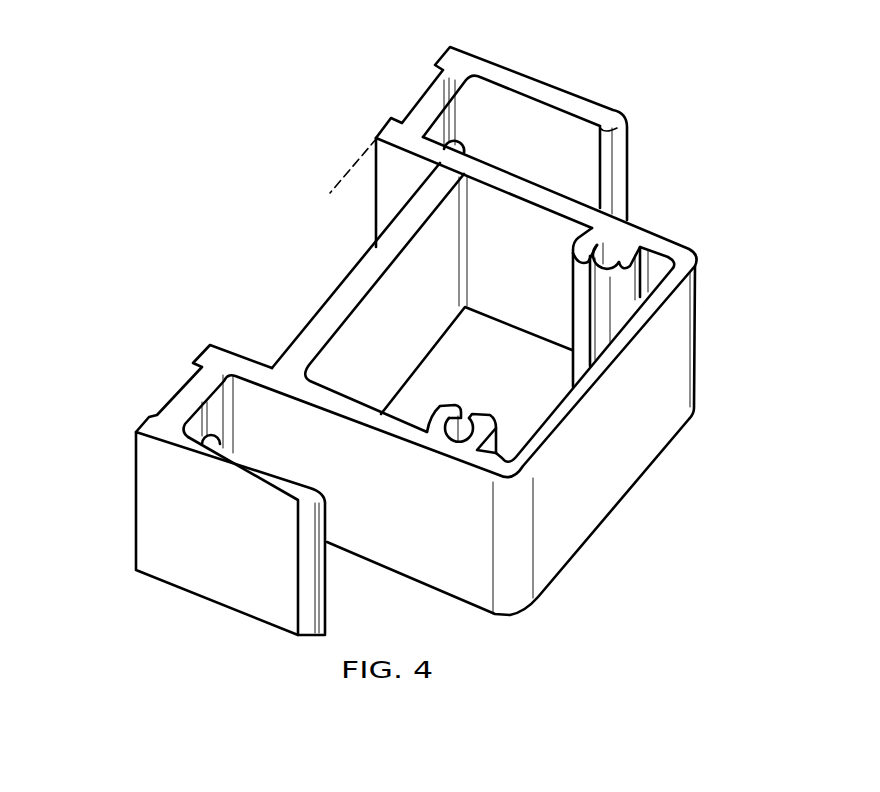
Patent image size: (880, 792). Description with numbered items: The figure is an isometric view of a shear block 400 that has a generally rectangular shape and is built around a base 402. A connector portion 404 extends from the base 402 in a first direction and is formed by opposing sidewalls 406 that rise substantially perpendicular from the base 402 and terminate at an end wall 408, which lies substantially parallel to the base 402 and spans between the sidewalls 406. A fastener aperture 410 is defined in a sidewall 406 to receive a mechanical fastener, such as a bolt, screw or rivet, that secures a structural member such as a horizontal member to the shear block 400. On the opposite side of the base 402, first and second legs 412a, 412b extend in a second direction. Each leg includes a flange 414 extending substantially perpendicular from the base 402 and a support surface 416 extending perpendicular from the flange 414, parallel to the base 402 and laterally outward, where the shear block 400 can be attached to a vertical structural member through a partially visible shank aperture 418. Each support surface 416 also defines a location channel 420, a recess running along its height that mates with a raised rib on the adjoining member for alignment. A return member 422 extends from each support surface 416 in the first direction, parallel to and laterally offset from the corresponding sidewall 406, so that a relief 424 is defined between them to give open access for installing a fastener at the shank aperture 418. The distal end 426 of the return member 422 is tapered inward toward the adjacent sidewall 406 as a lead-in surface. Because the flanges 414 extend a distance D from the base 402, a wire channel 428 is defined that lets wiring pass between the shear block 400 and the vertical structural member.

The shear block 400 is at (148, 81).
The base 402 is at (316, 322).
The connector portion 404 is at (663, 235).
The sidewalls 406 is at (570, 206).
The end wall 408 is at (662, 427).
The fastener aperture 410 is at (603, 255).
The first leg 412a is at (150, 384).
The second leg 412b is at (392, 85).
The flange 414 is at (387, 167).
The support surface 416 is at (437, 87).
The shank aperture 418 is at (466, 140).
The location channel 420 is at (413, 100).
The return member 422 is at (550, 93).
The relief 424 is at (558, 132).
The distal end 426 is at (624, 150).
The wire channel 428 is at (351, 263).
The distance D is at (403, 210).